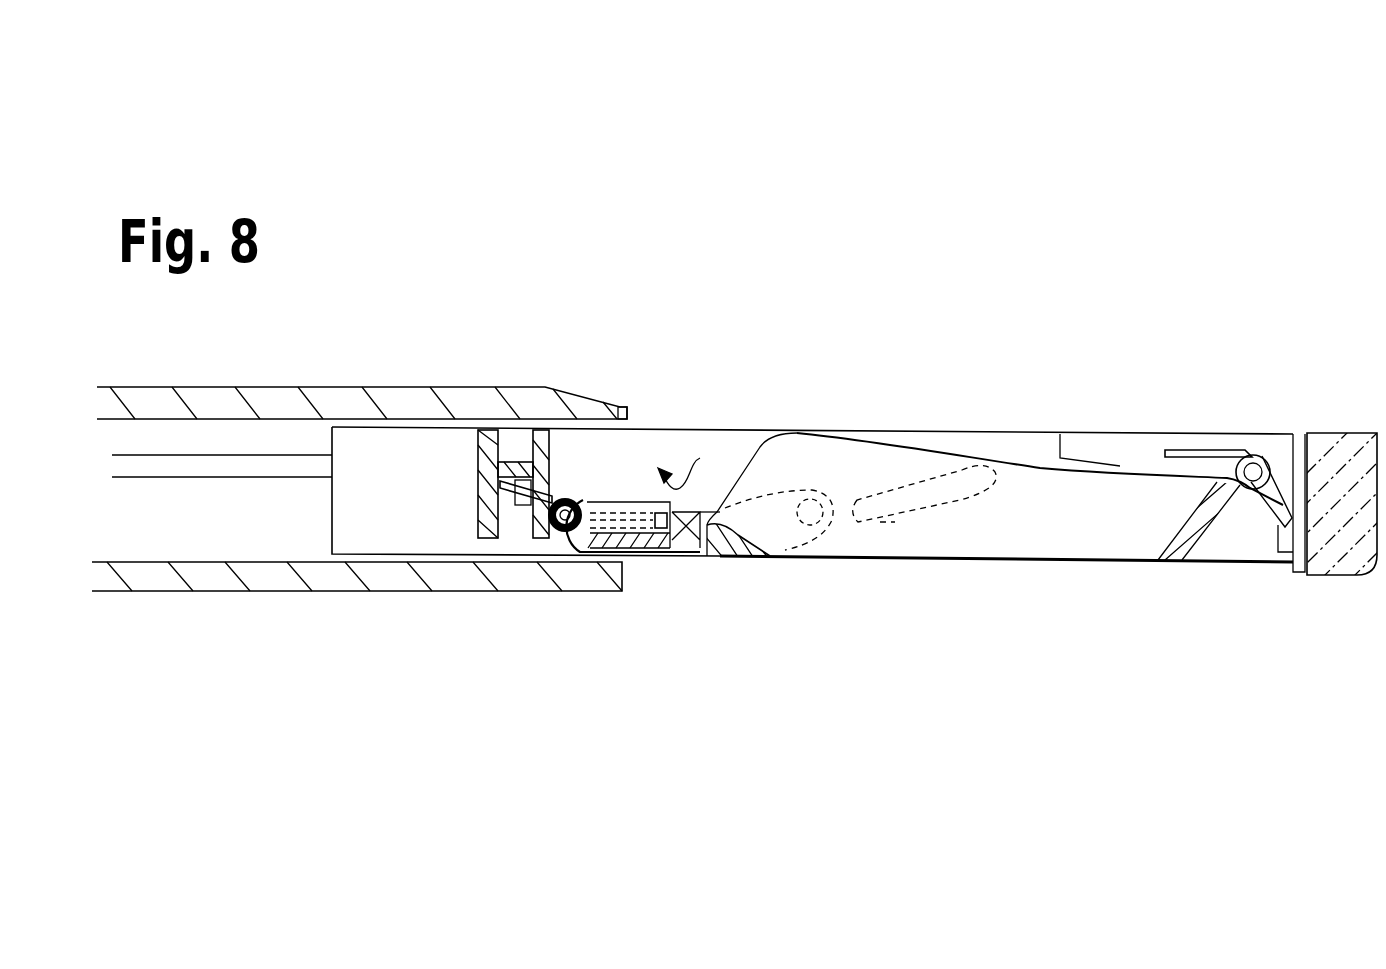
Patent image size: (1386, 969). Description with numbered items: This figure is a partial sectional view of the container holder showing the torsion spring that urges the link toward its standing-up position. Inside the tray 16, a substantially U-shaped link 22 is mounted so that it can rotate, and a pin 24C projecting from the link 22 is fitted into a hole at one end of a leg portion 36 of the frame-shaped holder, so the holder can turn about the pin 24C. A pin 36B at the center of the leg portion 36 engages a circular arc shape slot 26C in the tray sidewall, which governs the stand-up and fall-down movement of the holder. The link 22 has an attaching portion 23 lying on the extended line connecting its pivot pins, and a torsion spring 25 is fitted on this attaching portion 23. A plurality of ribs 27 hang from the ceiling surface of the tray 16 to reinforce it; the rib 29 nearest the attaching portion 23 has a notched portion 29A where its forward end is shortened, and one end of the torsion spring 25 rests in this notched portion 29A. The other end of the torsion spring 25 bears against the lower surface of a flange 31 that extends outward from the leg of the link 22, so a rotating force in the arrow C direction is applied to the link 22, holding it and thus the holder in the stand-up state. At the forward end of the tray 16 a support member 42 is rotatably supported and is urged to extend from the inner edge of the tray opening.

The tray 16 is at (410, 535).
The link 22 is at (283, 582).
The attaching portion 23 is at (582, 498).
The pin 24C is at (812, 503).
The torsion spring 25 is at (562, 538).
The circular arc shape slot 26C is at (898, 515).
The ribs 27 is at (483, 430).
The rib 29 is at (552, 465).
The notched portion 29A is at (530, 460).
The flange 31 is at (632, 505).
The leg portion 36 is at (1053, 533).
The pin 36B is at (990, 475).
The support member 42 is at (1120, 455).
The arrow C direction C is at (691, 464).